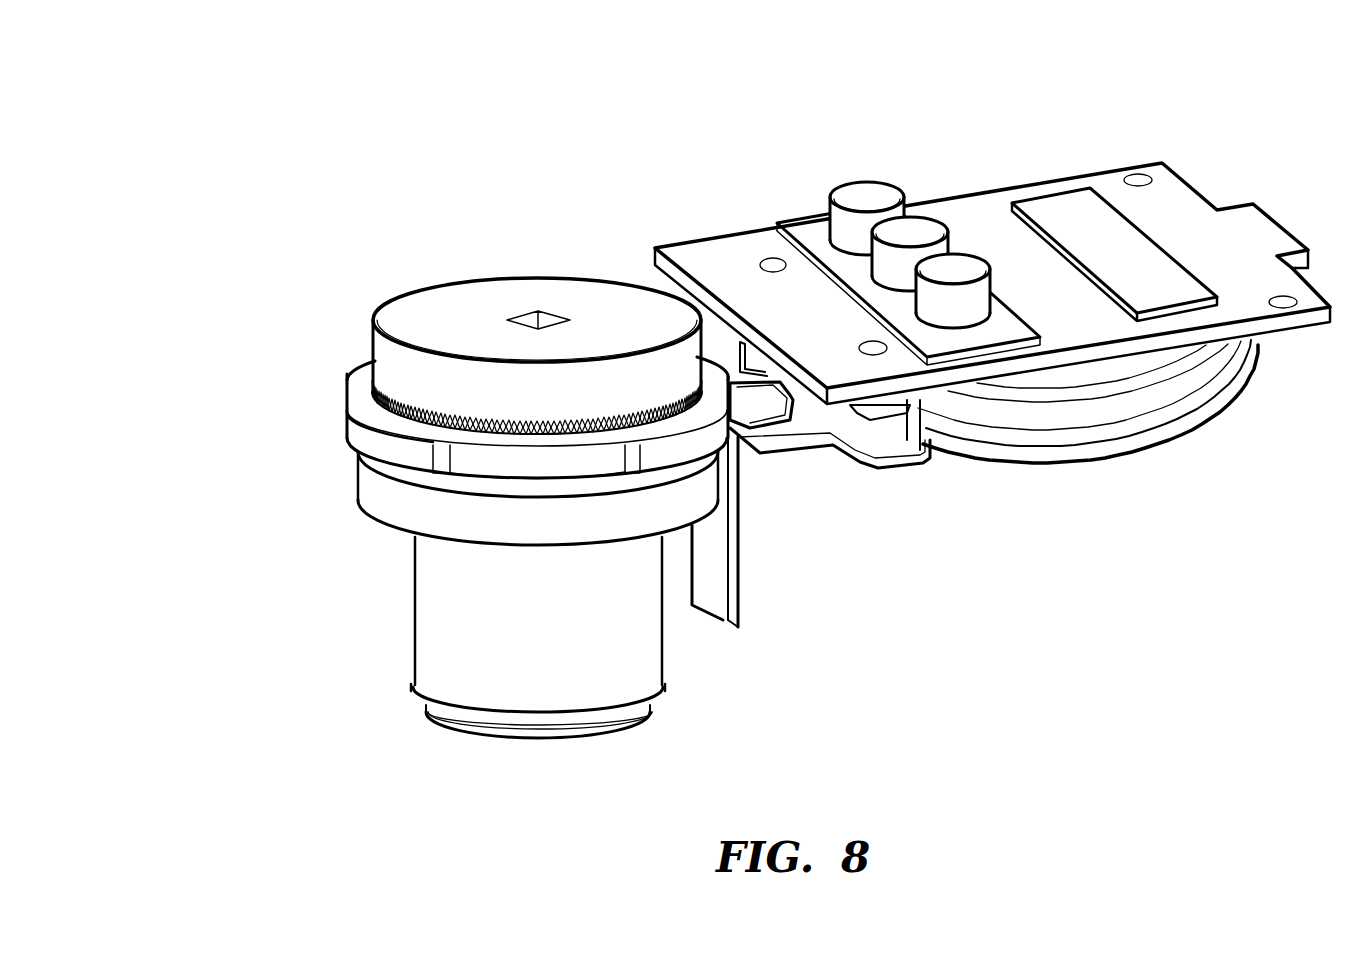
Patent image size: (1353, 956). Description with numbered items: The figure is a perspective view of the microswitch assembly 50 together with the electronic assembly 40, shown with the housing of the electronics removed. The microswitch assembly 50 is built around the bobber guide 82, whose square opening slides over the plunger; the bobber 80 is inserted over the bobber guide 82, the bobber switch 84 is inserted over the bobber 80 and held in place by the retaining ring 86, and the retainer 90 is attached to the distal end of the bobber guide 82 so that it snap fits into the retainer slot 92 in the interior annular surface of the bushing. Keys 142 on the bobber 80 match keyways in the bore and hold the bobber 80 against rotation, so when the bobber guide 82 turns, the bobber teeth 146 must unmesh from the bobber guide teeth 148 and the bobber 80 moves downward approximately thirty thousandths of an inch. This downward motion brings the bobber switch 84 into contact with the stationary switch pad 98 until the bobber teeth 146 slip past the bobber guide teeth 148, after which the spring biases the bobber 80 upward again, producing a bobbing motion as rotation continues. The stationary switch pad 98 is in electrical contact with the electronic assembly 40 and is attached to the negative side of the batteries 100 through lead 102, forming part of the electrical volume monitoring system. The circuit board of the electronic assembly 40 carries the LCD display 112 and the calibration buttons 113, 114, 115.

The electronic assembly 40 is at (1280, 197).
The microswitch assembly 50 is at (423, 218).
The bobber 80 is at (338, 407).
The bobber guide 82 is at (513, 293).
The bobber switch 84 is at (765, 397).
The retaining ring 86 is at (447, 558).
The retainer 90 is at (468, 731).
The retainer slot 92 is at (382, 348).
The stationary switch pad 98 is at (808, 445).
The batteries 100 is at (1117, 393).
The lead 102 is at (907, 428).
The LCD display 112 is at (1077, 210).
The calibration button 113 is at (867, 197).
The calibration button 114 is at (908, 232).
The calibration button 115 is at (953, 268).
The keys 142 is at (346, 366).
The bobber teeth 146 is at (430, 413).
The bobber guide teeth 148 is at (402, 409).